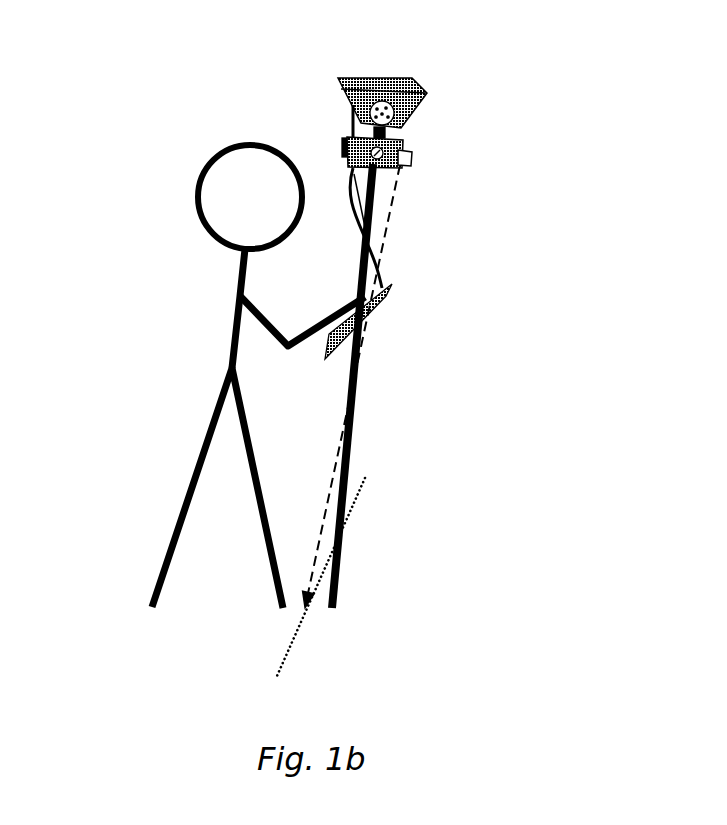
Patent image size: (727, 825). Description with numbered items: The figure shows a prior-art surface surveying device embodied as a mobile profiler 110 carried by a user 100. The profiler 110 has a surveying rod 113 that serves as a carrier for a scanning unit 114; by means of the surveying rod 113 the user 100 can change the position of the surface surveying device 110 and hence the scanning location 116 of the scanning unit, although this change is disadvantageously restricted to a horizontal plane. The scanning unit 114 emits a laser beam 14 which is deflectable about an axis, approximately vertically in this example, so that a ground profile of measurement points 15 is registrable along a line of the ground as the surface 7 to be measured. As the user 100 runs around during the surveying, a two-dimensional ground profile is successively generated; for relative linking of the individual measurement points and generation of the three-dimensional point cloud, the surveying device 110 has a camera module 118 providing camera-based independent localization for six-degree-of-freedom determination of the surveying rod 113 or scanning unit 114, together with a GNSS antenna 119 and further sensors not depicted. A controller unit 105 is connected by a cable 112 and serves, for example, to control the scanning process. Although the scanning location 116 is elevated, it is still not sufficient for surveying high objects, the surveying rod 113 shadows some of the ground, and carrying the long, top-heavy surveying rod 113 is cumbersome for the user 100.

The user 100 is at (208, 376).
The mobile profiler 110 is at (463, 85).
The GNSS antenna 119 is at (332, 90).
The camera module 118 is at (313, 138).
The scanning location 116 is at (472, 121).
The scanning unit 114 is at (412, 160).
The cable 112 is at (356, 200).
The surveying rod 113 is at (400, 386).
The controller unit 105 is at (401, 321).
The laser beam 14 is at (381, 386).
The measurement points 15 is at (295, 630).
The surface to be measured 7 is at (456, 580).